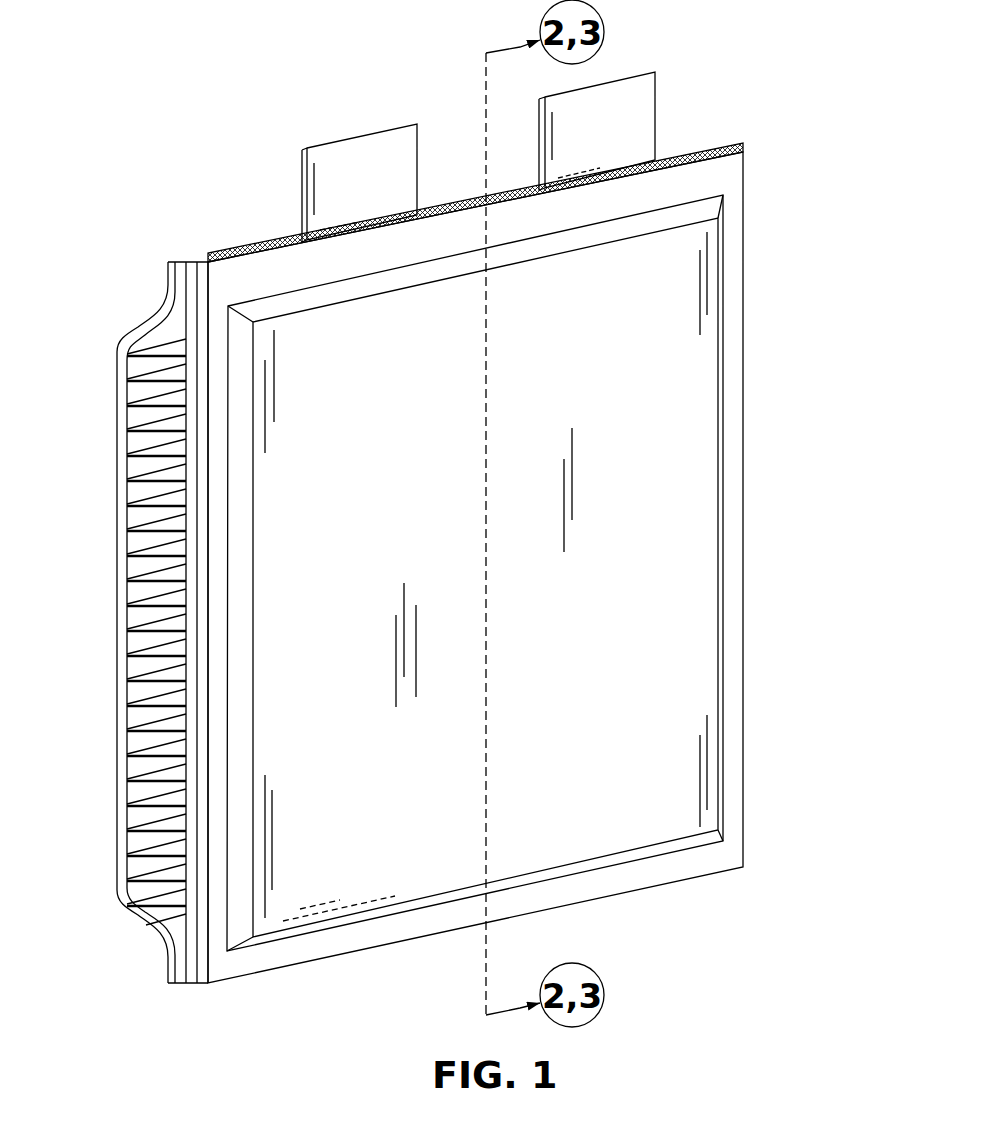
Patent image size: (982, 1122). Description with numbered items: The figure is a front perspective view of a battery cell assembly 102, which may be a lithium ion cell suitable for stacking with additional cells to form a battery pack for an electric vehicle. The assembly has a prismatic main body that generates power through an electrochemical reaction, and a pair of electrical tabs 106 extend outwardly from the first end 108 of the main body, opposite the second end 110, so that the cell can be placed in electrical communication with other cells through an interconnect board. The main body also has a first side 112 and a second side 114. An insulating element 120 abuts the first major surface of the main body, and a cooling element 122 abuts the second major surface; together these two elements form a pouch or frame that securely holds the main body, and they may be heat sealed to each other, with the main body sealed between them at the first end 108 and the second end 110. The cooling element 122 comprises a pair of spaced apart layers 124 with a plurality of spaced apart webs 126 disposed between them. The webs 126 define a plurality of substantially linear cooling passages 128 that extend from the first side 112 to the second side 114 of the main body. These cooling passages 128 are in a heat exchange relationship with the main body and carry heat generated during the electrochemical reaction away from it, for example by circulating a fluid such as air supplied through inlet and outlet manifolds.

The battery cell assembly 102 is at (758, 72).
The electrical tabs 106 is at (557, 127).
The first end 108 is at (728, 140).
The second end 110 is at (344, 990).
The first side 112 is at (105, 555).
The second side 114 is at (758, 573).
The insulating element 120 is at (394, 427).
The cooling element 122 is at (118, 450).
The spaced apart layers 124 is at (187, 877).
The webs 126 is at (140, 778).
The cooling passages 128 is at (141, 692).